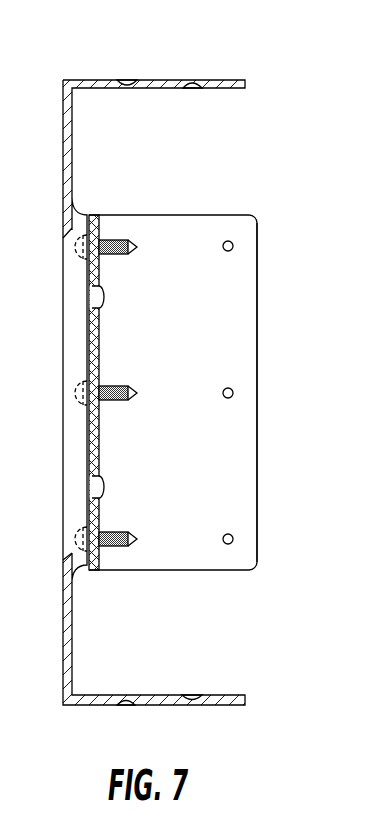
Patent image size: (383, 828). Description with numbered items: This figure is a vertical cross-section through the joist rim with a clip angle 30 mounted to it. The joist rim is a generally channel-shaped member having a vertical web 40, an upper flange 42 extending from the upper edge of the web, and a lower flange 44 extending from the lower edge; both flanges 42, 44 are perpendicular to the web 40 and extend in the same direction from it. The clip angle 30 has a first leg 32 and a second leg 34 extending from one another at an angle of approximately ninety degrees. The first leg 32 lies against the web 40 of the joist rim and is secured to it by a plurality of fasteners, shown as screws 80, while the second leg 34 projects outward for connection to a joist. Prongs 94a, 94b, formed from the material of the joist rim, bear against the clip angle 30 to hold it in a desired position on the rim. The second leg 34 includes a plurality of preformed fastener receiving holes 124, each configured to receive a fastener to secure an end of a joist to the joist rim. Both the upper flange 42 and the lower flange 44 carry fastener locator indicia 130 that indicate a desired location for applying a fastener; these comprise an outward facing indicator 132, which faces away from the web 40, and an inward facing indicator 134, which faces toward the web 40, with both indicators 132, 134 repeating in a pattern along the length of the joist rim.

The clip angle 30 is at (191, 394).
The first leg 32 is at (100, 344).
The second leg 34 is at (258, 240).
The web portion 40 is at (191, 379).
The upper flange 42 is at (97, 80).
The lower flange 44 is at (88, 706).
The screws 80 is at (131, 246).
The prong 94a is at (104, 299).
The prong 94b is at (104, 487).
The fastener receiving holes 124 is at (224, 250).
The fastener locator indicia 130 is at (207, 127).
The outward facing indicator 132 is at (128, 79).
The inward facing indicator 134 is at (194, 89).